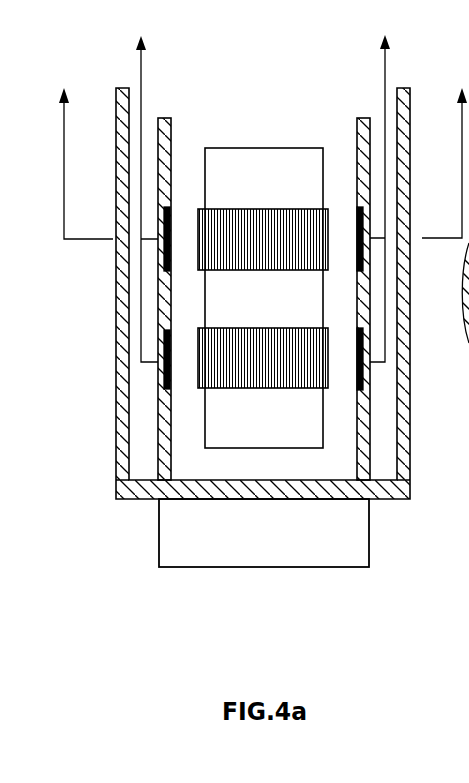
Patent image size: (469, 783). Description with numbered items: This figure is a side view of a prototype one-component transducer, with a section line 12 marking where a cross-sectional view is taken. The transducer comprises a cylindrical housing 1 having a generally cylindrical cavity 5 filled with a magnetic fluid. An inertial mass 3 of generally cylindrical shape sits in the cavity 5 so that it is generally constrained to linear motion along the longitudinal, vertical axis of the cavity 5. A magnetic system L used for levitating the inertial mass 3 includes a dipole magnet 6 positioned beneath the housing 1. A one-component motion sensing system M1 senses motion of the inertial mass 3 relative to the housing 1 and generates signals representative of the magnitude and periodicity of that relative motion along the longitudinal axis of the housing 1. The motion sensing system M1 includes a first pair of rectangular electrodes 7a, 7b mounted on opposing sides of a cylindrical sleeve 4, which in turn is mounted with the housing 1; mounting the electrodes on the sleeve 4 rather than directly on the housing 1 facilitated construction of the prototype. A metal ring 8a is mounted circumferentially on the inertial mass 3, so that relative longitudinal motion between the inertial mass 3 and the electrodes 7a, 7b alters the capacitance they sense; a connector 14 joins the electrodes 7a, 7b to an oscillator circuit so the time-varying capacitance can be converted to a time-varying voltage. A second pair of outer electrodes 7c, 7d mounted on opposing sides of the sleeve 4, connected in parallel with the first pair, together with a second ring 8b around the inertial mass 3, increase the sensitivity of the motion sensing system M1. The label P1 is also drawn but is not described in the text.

The cylindrical housing 1 is at (117, 143).
The inertial mass 3 is at (269, 306).
The cylindrical sleeve 4 is at (158, 182).
The cylindrical cavity 5 is at (191, 302).
The dipole magnet 6 is at (369, 543).
The rectangular electrode 7a is at (165, 218).
The rectangular electrode 7b is at (362, 218).
The outer electrode 7c is at (165, 335).
The outer electrode 7d is at (362, 335).
The metal ring 8a is at (222, 208).
The second ring 8b is at (293, 388).
The section line 12 is at (259, 150).
The connector 14 is at (140, 75).
The motion sensing system M1 is at (99, 289).
The magnetic system L is at (126, 532).
The position indicator P1 is at (320, 36).